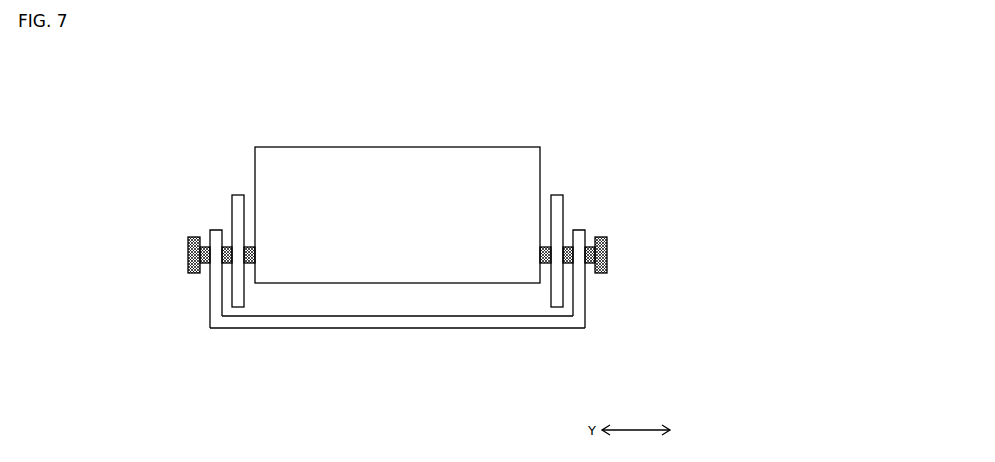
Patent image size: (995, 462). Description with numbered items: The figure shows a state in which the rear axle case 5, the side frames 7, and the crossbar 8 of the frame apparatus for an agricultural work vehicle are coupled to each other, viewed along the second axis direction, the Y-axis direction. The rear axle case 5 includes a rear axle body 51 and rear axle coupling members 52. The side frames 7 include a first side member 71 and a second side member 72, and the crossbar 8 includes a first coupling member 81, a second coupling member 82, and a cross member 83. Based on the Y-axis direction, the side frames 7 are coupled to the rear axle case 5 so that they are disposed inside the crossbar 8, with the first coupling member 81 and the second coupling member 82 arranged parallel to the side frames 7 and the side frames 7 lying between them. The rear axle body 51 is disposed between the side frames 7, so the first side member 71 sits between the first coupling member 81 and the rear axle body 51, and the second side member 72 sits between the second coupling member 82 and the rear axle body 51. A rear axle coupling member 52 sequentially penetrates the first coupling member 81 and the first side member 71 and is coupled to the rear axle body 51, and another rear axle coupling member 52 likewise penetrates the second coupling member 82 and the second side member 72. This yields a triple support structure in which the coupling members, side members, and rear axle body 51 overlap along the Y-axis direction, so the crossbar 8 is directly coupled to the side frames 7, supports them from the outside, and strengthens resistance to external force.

The rear axle case 5 is at (133, 222).
The rear axle body 51 is at (277, 208).
The rear axle coupling member 52 is at (188, 272).
The side frames 7 is at (586, 100).
The first side member 71 is at (237, 195).
The second side member 72 is at (558, 195).
The crossbar 8 is at (183, 381).
The first coupling member 81 is at (209, 273).
The second coupling member 82 is at (586, 272).
The cross member 83 is at (398, 328).